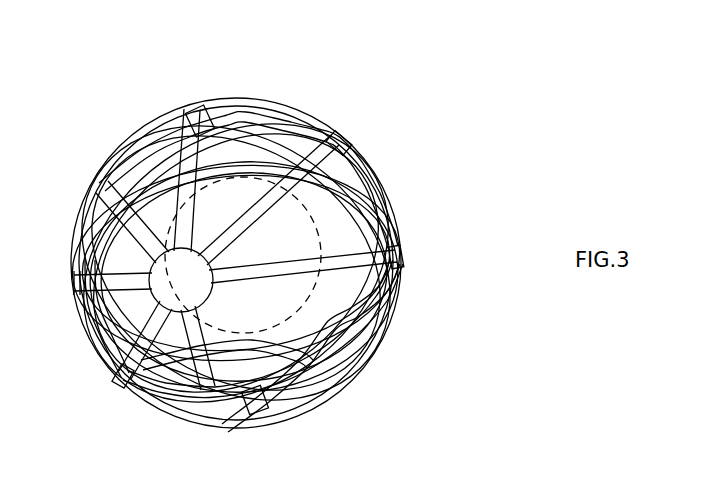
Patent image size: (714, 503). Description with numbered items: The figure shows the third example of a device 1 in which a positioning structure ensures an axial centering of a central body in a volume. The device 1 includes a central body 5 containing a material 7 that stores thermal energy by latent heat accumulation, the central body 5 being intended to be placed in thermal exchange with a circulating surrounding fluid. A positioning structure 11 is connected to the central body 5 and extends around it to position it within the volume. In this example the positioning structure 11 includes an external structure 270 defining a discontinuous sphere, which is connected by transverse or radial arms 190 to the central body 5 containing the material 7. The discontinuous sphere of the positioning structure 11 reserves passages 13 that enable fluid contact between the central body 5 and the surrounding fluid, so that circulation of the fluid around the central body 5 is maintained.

The device 1 is at (352, 84).
The positioning structure 11 is at (114, 408).
The passages 13 is at (256, 108).
The central body 5 is at (160, 240).
The material 7 is at (252, 250).
The transverse or radial arms 190 is at (200, 130).
The external structure 270 is at (362, 186).